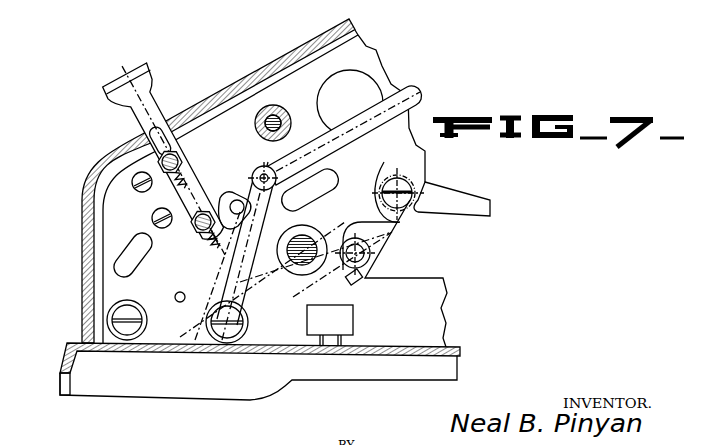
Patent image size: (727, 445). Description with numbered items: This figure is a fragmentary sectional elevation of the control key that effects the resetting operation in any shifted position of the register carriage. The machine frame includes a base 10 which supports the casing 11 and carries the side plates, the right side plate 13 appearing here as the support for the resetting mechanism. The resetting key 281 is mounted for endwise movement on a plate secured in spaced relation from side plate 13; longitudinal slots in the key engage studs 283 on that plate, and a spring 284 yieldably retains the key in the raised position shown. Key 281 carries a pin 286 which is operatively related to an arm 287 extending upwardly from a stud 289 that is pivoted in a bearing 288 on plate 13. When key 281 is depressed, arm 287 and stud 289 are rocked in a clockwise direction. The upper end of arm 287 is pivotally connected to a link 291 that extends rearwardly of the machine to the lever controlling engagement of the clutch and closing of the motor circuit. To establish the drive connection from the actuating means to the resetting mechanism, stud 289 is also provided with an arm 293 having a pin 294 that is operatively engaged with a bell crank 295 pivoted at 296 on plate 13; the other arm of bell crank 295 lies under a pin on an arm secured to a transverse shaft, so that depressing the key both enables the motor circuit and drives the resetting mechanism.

The base 10 is at (173, 385).
The casing 11 is at (82, 243).
The right side plate 13 is at (366, 42).
The resetting key 281 is at (156, 86).
The studs 283 is at (181, 156).
The spring 284 is at (214, 246).
The pin 286 is at (233, 195).
The arm 287 is at (215, 292).
The bearing 288 is at (248, 330).
The stud 289 is at (206, 326).
The link 291 is at (366, 113).
The arm 293 is at (322, 289).
The pin 294 is at (369, 251).
The bell crank 295 is at (458, 181).
The pivot 296 is at (413, 207).